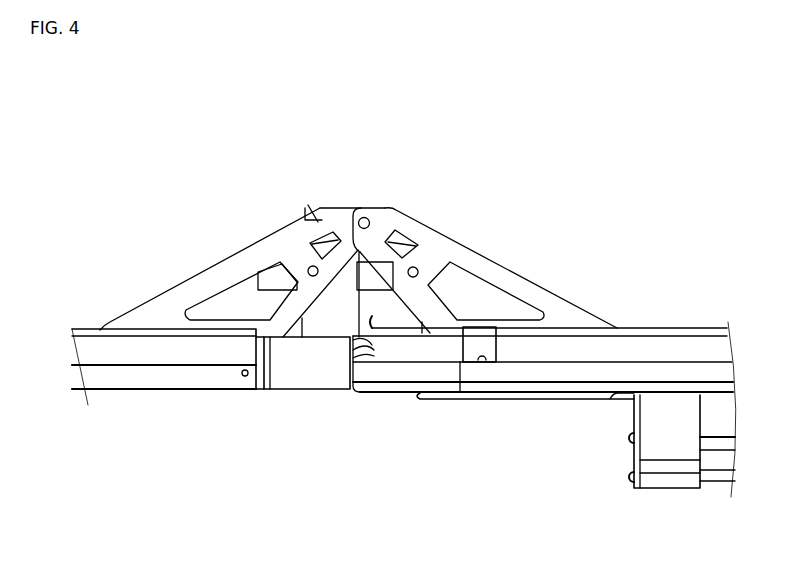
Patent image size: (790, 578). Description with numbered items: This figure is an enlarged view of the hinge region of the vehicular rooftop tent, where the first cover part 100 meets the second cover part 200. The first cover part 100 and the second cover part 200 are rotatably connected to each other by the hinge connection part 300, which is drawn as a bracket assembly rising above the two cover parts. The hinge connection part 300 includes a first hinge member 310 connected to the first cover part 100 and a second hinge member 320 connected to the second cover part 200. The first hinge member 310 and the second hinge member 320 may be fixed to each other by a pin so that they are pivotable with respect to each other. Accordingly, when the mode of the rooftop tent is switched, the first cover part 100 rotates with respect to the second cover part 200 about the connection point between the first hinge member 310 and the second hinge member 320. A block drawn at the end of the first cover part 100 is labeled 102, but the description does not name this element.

The first cover part 100 is at (647, 324).
The rail end block 102 is at (707, 479).
The second cover part 200 is at (153, 392).
The hinge connection part 300 is at (422, 148).
The first hinge member 310 is at (388, 207).
The second hinge member 320 is at (322, 212).